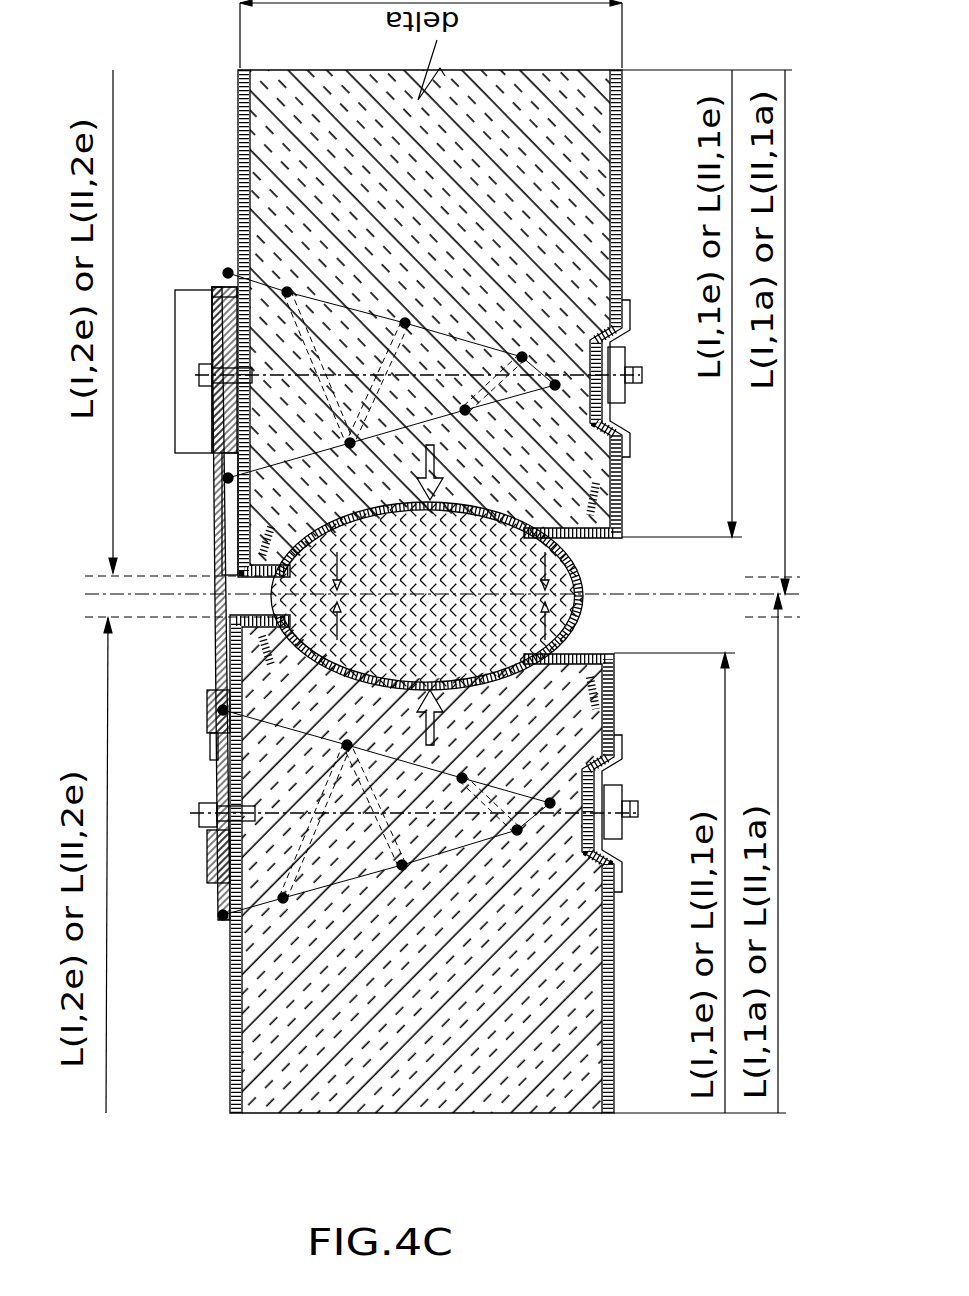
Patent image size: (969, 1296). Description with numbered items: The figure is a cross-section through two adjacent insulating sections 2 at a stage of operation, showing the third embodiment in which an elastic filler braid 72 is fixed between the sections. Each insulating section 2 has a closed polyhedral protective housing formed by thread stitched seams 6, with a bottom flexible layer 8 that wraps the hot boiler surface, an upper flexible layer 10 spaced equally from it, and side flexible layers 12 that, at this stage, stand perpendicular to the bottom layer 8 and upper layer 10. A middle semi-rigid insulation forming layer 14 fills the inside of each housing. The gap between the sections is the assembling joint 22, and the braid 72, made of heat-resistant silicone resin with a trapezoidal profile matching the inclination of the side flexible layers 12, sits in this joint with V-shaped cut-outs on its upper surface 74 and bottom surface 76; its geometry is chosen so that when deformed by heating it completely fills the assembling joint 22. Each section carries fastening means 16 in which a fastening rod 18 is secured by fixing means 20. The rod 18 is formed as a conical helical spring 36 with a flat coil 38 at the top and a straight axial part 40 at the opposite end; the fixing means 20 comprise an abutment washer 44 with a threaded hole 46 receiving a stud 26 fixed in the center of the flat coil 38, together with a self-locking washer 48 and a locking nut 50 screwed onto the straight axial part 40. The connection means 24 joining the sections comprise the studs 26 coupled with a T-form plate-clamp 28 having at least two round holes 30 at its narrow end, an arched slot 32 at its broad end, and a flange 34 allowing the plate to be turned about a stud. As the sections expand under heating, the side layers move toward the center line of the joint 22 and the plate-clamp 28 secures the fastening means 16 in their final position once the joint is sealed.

The insulating section 2 is at (525, 70).
The thread stitched seams 6 is at (270, 553).
The bottom flexible layer 8 is at (622, 157).
The upper flexible layer 10 is at (238, 133).
The side flexible layers 12 is at (506, 512).
The middle semi-rigid insulation forming layer 14 is at (313, 117).
The fastening means 16 is at (528, 353).
The fastening rod 18 is at (405, 318).
The fixing means 20 is at (628, 305).
The assembling joint 22 is at (585, 604).
The connection means 24 is at (212, 548).
The stud 26 is at (198, 388).
The plate-clamp 28 is at (212, 493).
The round holes 30 is at (215, 745).
The arched slot 32 is at (199, 378).
The flange 34 is at (200, 297).
The conical helical spring 36 is at (350, 440).
The flat coil 38 is at (228, 268).
The straight axial part 40 is at (642, 380).
The abutment washer 44 is at (287, 287).
The threaded hole 46 is at (212, 357).
The self-locking washer 48 is at (628, 445).
The locking nut 50 is at (625, 365).
The elastic filler braid 72 is at (412, 598).
The upper surface V-shaped cut-out 74 is at (348, 613).
The bottom surface V-shaped cut-out 76 is at (535, 592).